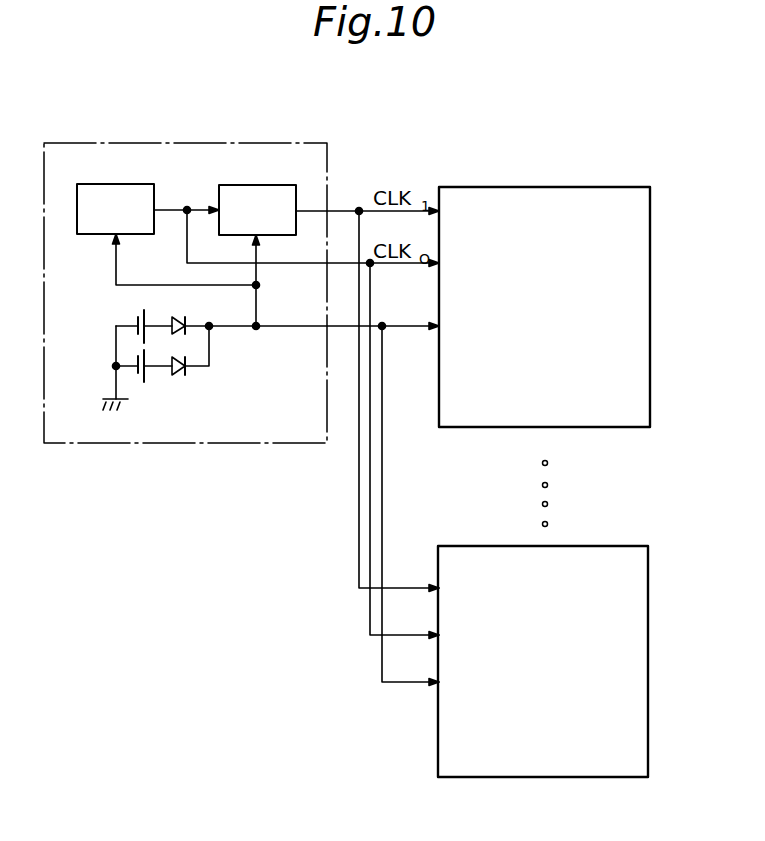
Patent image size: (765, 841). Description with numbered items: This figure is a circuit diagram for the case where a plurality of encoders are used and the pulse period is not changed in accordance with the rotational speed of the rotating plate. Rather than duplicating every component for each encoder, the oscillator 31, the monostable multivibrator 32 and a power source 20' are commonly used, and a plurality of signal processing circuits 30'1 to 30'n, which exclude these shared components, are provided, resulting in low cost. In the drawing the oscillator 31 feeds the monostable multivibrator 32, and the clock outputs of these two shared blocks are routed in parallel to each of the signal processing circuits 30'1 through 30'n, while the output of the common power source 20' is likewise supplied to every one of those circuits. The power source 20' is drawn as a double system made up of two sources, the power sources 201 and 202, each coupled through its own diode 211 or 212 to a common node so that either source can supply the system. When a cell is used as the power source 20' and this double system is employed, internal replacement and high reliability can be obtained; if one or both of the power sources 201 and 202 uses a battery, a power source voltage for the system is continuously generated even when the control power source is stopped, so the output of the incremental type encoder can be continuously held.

The oscillator 31 is at (95, 184).
The monostable multivibrator 32 is at (240, 184).
The power source 20' is at (142, 363).
The power source 201 is at (140, 314).
The power source 202 is at (142, 382).
The first diode 211 is at (179, 314).
The second diode 212 is at (182, 374).
The signal processing circuit 30'1 is at (567, 307).
The signal processing circuit 30'n is at (565, 661).